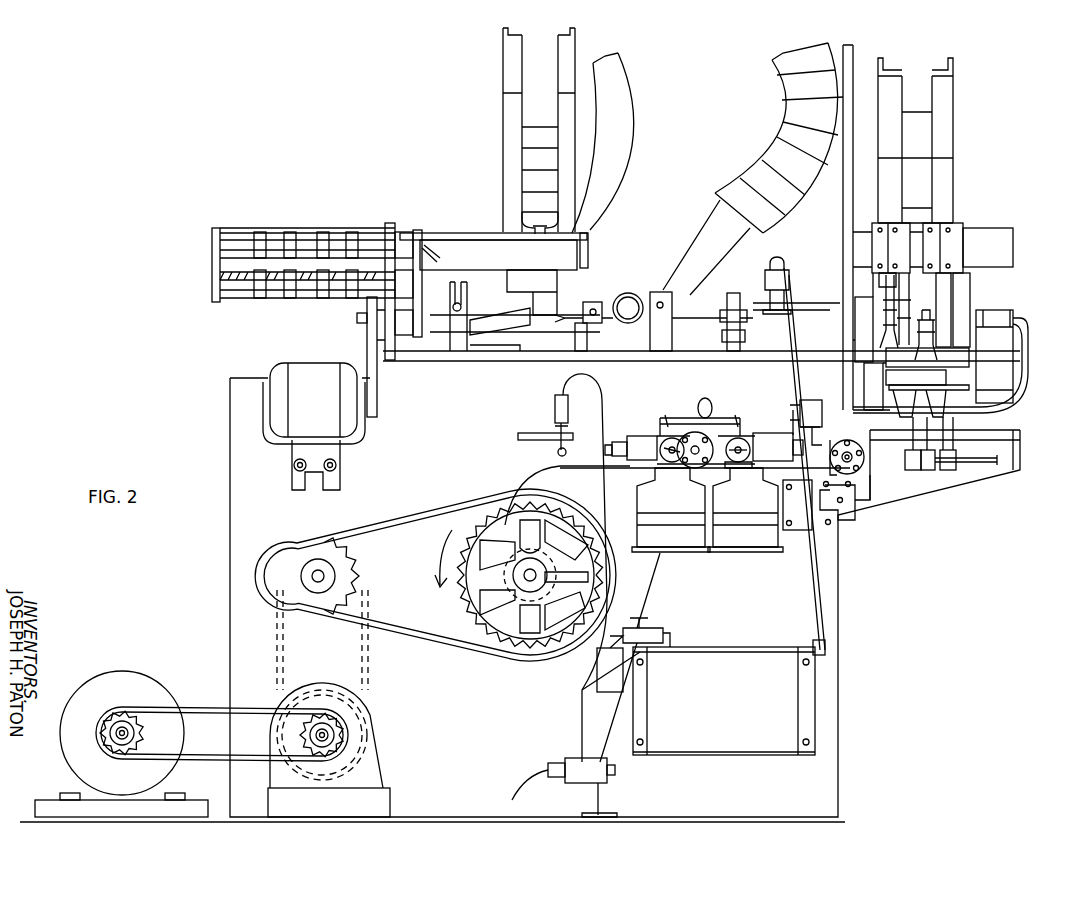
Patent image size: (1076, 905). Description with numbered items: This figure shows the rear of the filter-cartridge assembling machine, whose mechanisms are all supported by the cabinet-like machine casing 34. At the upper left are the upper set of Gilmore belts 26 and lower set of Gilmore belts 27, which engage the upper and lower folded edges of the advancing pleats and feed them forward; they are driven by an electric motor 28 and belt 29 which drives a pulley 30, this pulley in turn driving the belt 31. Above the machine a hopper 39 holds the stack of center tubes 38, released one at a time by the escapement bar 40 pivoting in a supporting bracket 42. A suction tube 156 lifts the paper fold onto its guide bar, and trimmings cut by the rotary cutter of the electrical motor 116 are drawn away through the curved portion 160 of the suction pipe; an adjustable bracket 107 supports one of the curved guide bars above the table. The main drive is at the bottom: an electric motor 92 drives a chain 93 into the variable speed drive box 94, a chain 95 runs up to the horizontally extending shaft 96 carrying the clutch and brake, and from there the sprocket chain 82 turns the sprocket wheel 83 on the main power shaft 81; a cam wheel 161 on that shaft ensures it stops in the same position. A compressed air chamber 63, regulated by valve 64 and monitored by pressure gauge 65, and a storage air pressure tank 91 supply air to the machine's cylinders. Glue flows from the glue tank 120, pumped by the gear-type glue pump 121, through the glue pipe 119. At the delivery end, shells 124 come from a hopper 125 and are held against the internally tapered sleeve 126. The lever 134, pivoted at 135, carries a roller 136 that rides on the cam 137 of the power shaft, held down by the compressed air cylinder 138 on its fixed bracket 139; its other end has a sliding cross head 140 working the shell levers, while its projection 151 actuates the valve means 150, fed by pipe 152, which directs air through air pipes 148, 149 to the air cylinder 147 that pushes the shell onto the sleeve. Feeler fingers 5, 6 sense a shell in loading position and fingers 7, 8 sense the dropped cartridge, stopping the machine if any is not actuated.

The feeler finger 5 is at (913, 333).
The feeler finger 6 is at (933, 318).
The feeler finger 7 is at (910, 392).
The feeler finger 8 is at (940, 393).
The upper set of Gilmore belts 26 is at (323, 233).
The lower set of Gilmore belts 27 is at (293, 290).
The electric motor 28 is at (300, 370).
The belt 29 is at (368, 356).
The pulley 30 is at (358, 320).
The belt 31 is at (416, 240).
The machine casing 34 is at (219, 545).
The center tubes 38 is at (535, 157).
The hopper 39 is at (503, 75).
The escapement bar 40 is at (480, 262).
The supporting bracket 42 is at (589, 254).
The compressed air chamber 63 is at (757, 533).
The valve 64 is at (765, 437).
The pressure gauge 65 is at (740, 466).
The main power shaft 81 is at (528, 582).
The sprocket chain 82 is at (423, 510).
The sprocket wheel 83 is at (457, 608).
The storage air pressure tank 91 is at (682, 533).
The electric motor 92 is at (122, 680).
The chain 93 is at (215, 710).
The variable speed drive box 94 is at (365, 768).
The chain 95 is at (365, 672).
The horizontally extending shaft 96 is at (324, 576).
The adjustable bracket 107 is at (727, 338).
The electrical motor 116 is at (628, 293).
The glue pipe 119 is at (780, 258).
The glue tank 120 is at (790, 707).
The gear-type glue pump 121 is at (612, 680).
The shells 124 is at (920, 185).
The hopper 125 is at (945, 95).
The sleeve 126 is at (858, 318).
The lever 134 is at (625, 440).
The pivot 135 is at (695, 445).
The roller 136 is at (575, 505).
The cam 137 is at (505, 545).
The compressed air cylinder 138 is at (555, 410).
The fixed bracket 139 is at (530, 436).
The sliding cross head 140 is at (848, 470).
The air cylinder 147 is at (996, 318).
The air pipe 148 is at (1024, 345).
The air pipe 149 is at (960, 395).
The valve means 150 is at (815, 400).
The projection 151 is at (790, 497).
The pipe 152 is at (792, 400).
The suction tube 156 is at (618, 78).
The curved portion of suction pipe 160 is at (795, 120).
The cam wheel 161 is at (500, 545).